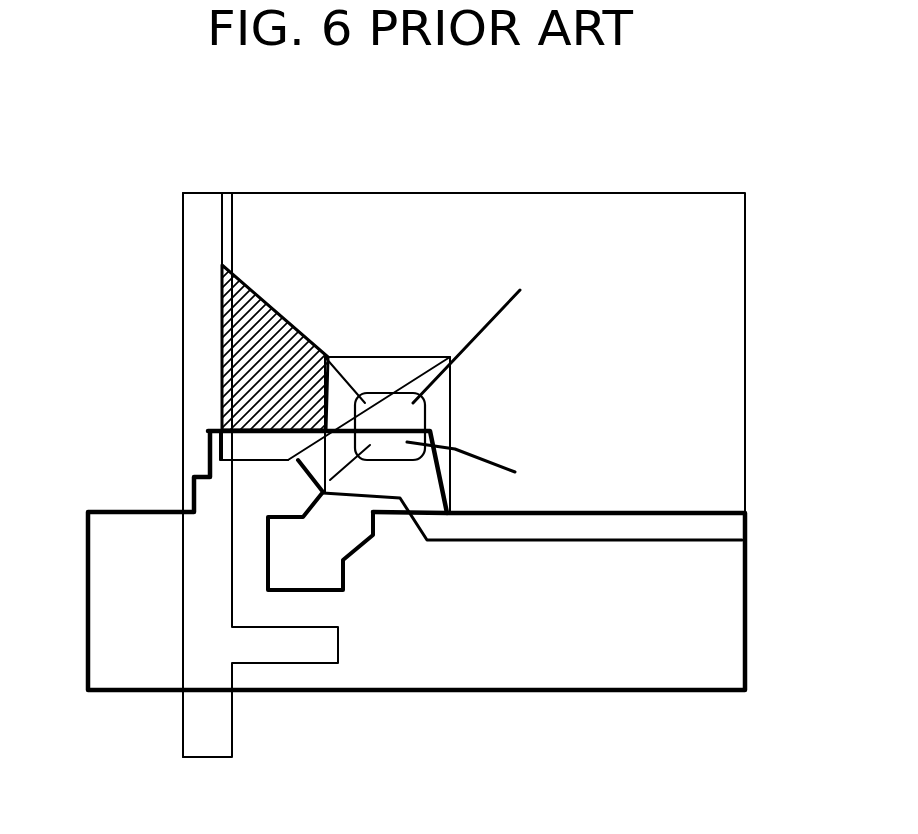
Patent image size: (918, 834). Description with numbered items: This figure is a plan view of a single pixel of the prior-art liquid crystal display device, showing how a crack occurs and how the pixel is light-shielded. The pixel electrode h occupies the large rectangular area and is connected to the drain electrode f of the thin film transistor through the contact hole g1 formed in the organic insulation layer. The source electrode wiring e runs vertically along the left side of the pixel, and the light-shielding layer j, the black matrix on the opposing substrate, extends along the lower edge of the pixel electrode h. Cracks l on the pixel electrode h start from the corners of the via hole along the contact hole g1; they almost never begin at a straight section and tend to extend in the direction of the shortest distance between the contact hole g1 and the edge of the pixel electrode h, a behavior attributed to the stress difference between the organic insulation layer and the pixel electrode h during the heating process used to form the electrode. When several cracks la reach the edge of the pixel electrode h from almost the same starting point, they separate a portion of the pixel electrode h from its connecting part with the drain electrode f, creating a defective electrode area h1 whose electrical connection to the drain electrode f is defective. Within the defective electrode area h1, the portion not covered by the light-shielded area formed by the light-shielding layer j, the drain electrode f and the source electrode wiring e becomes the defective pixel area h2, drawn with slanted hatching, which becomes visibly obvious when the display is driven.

The pixel electrode h is at (710, 395).
The source electrode wiring e is at (203, 413).
The light-shielding layer j is at (695, 512).
The defective electrode area h1 is at (258, 288).
The defective pixel area h2 is at (303, 345).
The drain electrode f is at (375, 375).
The contact hole g1 is at (398, 400).
The cracks la is at (330, 422).
The cracks l is at (488, 455).